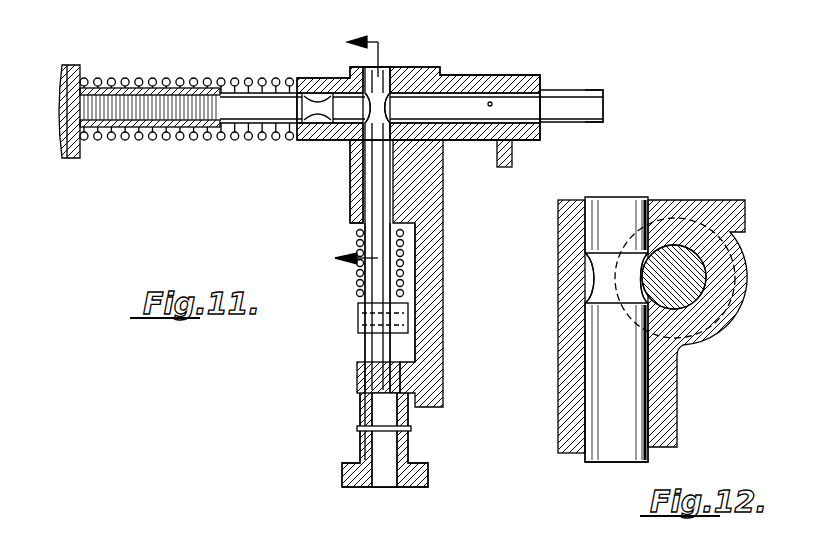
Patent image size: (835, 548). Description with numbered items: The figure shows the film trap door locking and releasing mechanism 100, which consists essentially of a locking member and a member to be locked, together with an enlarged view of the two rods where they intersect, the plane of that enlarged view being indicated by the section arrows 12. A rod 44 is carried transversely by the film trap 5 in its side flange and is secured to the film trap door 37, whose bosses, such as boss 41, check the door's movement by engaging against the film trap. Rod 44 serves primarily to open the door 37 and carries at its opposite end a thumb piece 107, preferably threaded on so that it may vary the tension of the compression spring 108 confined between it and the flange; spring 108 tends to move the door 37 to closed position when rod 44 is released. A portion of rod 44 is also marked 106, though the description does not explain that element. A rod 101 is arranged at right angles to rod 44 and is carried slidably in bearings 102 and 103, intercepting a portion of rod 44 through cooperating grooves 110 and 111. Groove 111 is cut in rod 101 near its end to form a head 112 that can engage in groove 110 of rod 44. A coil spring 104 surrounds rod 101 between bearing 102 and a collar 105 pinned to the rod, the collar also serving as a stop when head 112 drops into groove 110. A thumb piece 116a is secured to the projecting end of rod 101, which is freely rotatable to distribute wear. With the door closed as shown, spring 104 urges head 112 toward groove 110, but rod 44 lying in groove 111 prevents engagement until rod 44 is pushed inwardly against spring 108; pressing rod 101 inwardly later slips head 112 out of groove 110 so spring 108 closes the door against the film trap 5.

In FIG. 11, the film trap 5 is at (428, 67).
In FIG. 12, the film trap 5 is at (698, 202).
In FIG. 11, the section line arrows 12 is at (362, 163).
In FIG. 11, the film trap door 37 is at (512, 157).
In FIG. 11, the boss 41 is at (493, 75).
In FIG. 11, the rod 44 is at (648, 115).
In FIG. 12, the rod 44 is at (693, 285).
In FIG. 11, the film trap door locking and releasing mechanism 100 is at (340, 218).
In FIG. 11, the rod 101 is at (366, 298).
In FIG. 12, the rod 101 is at (605, 387).
In FIG. 11, the bearing 102 is at (352, 186).
In FIG. 11, the bearing 103 is at (356, 376).
In FIG. 11, the coil spring 104 is at (356, 240).
In FIG. 11, the collar 105 is at (356, 328).
In FIG. 11, the push rod 106 is at (492, 103).
In FIG. 11, the thumb piece 107 is at (62, 145).
In FIG. 11, the compression spring 108 is at (230, 80).
In FIG. 11, the groove 110 is at (320, 93).
In FIG. 11, the groove 111 is at (392, 101).
In FIG. 12, the groove 111 is at (598, 288).
In FIG. 11, the head 112 is at (378, 68).
In FIG. 12, the head 112 is at (622, 190).
In FIG. 11, the thumb piece 116a is at (343, 472).